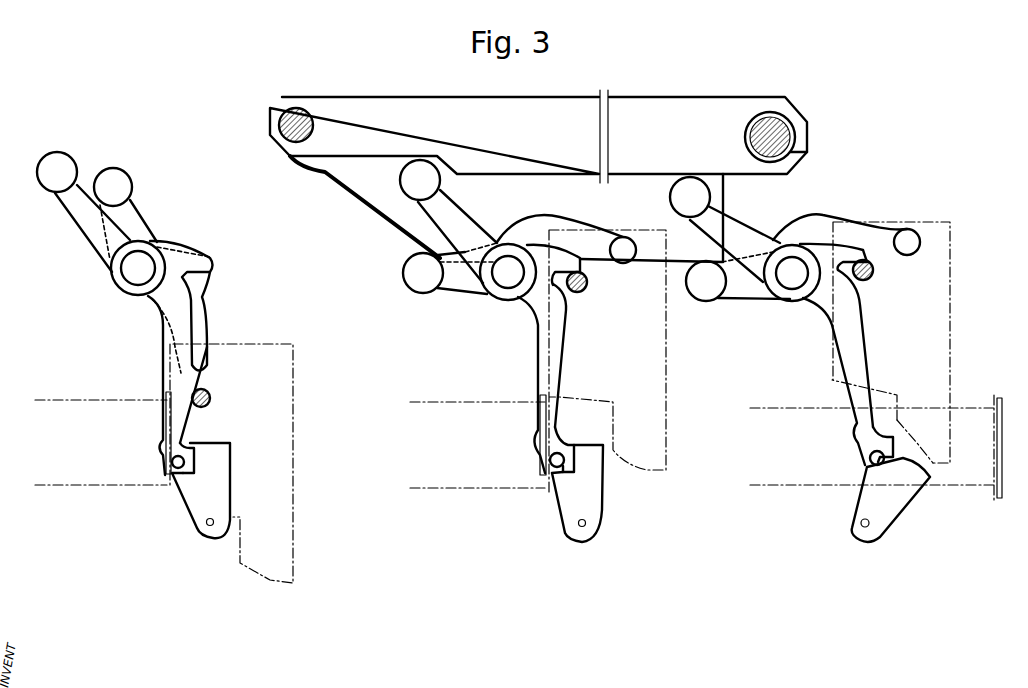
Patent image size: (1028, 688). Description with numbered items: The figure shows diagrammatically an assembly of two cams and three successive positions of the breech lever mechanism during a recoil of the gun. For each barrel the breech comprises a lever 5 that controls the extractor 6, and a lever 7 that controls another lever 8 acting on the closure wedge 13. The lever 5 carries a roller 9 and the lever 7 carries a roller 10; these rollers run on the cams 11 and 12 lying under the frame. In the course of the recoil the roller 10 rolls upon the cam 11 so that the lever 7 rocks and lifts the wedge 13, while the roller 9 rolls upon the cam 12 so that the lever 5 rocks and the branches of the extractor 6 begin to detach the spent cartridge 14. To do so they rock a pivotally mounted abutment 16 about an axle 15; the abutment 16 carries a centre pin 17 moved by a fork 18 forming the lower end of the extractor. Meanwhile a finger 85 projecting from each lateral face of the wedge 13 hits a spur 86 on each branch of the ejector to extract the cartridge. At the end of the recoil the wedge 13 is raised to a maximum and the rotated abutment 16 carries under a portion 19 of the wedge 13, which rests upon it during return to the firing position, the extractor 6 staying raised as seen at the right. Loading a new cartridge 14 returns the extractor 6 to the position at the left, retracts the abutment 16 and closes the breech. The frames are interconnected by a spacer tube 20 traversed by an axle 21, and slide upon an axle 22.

The lever 5 is at (82, 215).
The extractor 6 is at (163, 330).
The lever 7 is at (128, 222).
The lever 8 is at (200, 313).
The roller 9 is at (50, 168).
The roller 10 is at (115, 180).
The cam 11 is at (397, 217).
The cam 12 is at (437, 156).
The wedge 13 is at (257, 357).
The cartridge 14 is at (70, 465).
The axle 15 is at (207, 523).
The abutment 16 is at (217, 473).
The centre pin 17 is at (168, 462).
The fork 18 is at (183, 447).
The portion 19 is at (925, 452).
The spacer tube 20 is at (787, 122).
The axle 21 is at (790, 152).
The axle 22 is at (280, 130).
The finger 85 is at (210, 395).
The spur 86 is at (202, 258).